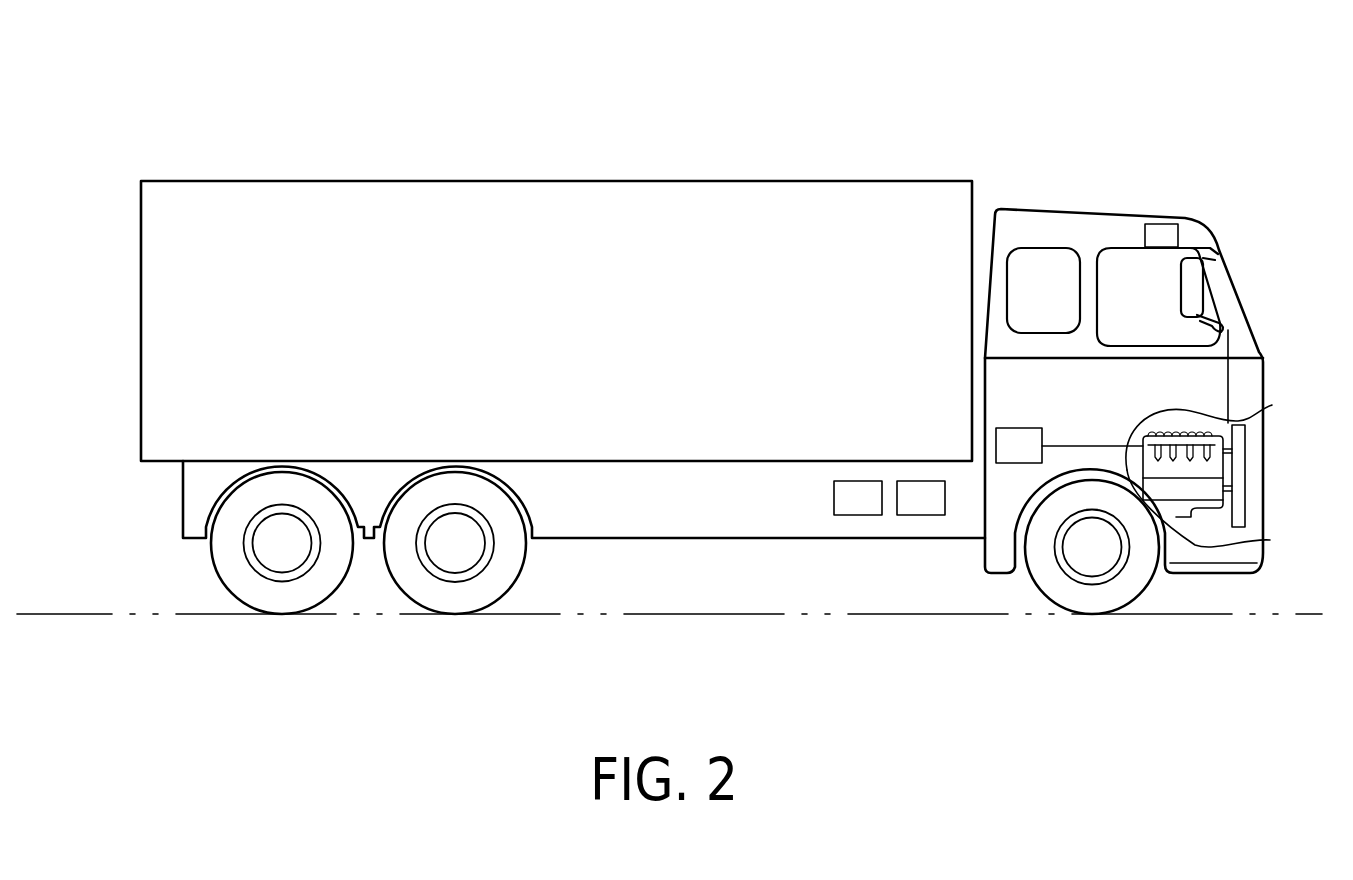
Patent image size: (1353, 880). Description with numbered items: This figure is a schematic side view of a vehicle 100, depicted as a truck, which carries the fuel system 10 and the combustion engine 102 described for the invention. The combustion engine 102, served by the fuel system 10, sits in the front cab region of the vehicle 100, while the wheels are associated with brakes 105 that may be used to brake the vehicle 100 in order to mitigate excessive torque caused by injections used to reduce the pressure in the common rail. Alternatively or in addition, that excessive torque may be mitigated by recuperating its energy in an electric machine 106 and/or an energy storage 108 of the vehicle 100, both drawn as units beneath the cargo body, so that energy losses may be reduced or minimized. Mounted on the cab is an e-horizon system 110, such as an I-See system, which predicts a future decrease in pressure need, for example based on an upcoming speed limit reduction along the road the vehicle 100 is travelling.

The vehicle 100 is at (1137, 96).
The fuel system 10 is at (1190, 433).
The combustion engine 102 is at (1190, 487).
The brakes 105 is at (452, 593).
The electric machine 106 is at (872, 515).
The energy storage 108 is at (935, 515).
The e-horizon system 110 is at (1160, 233).